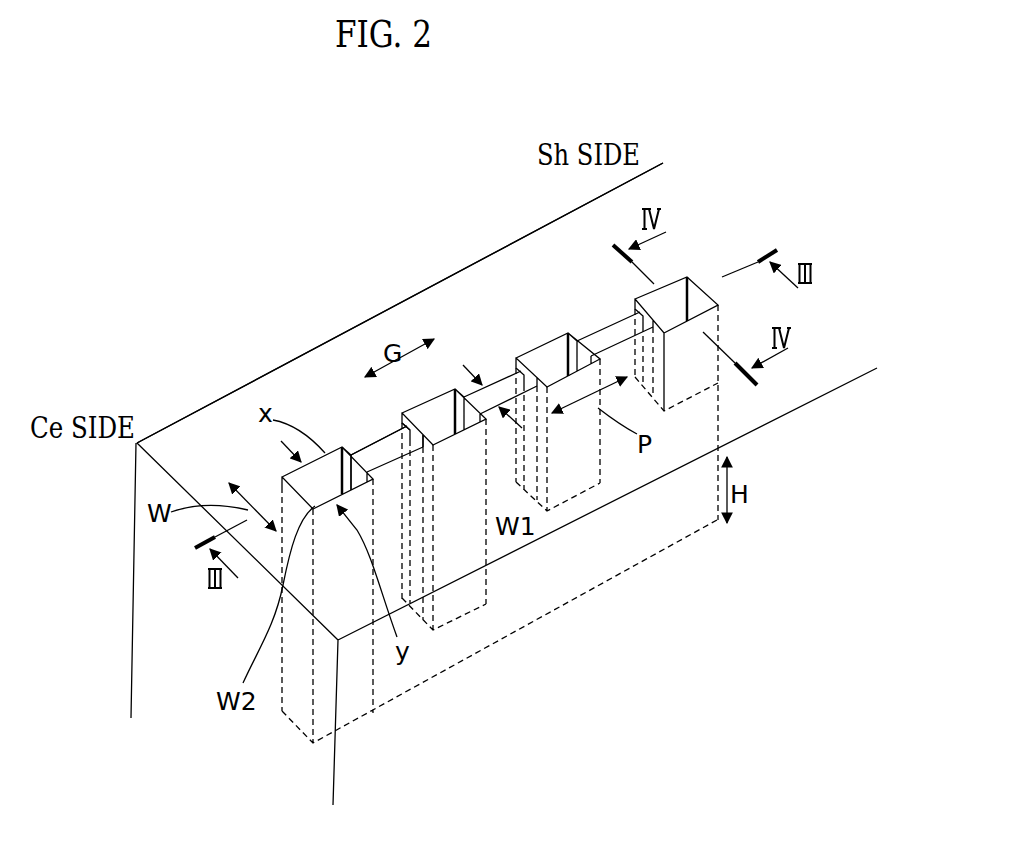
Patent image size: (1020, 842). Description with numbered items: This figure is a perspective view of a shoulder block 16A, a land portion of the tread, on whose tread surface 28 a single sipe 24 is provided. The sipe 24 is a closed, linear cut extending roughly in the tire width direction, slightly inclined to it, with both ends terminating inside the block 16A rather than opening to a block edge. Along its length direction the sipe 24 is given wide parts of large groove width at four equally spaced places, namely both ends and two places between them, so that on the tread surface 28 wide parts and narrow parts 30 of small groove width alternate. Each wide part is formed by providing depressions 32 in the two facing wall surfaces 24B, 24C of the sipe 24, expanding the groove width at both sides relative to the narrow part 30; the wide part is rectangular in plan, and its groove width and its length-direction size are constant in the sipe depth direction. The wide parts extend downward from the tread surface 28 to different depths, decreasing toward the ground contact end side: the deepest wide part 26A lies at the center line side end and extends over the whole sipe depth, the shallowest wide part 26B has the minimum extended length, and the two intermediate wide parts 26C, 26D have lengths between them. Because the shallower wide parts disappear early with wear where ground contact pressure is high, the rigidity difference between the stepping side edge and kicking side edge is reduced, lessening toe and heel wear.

The block 16A is at (246, 360).
The sipe 24 is at (522, 340).
The wall surface 24B is at (385, 421).
The wall surface 24C is at (352, 440).
The deepest wide part 26A is at (287, 470).
The shallowest wide part 26B is at (687, 276).
The intermediate wide part 26C is at (446, 385).
The intermediate wide part 26D is at (545, 352).
The tread surface 28 is at (308, 367).
The narrow part 30 is at (370, 453).
The depression 32 is at (418, 418).